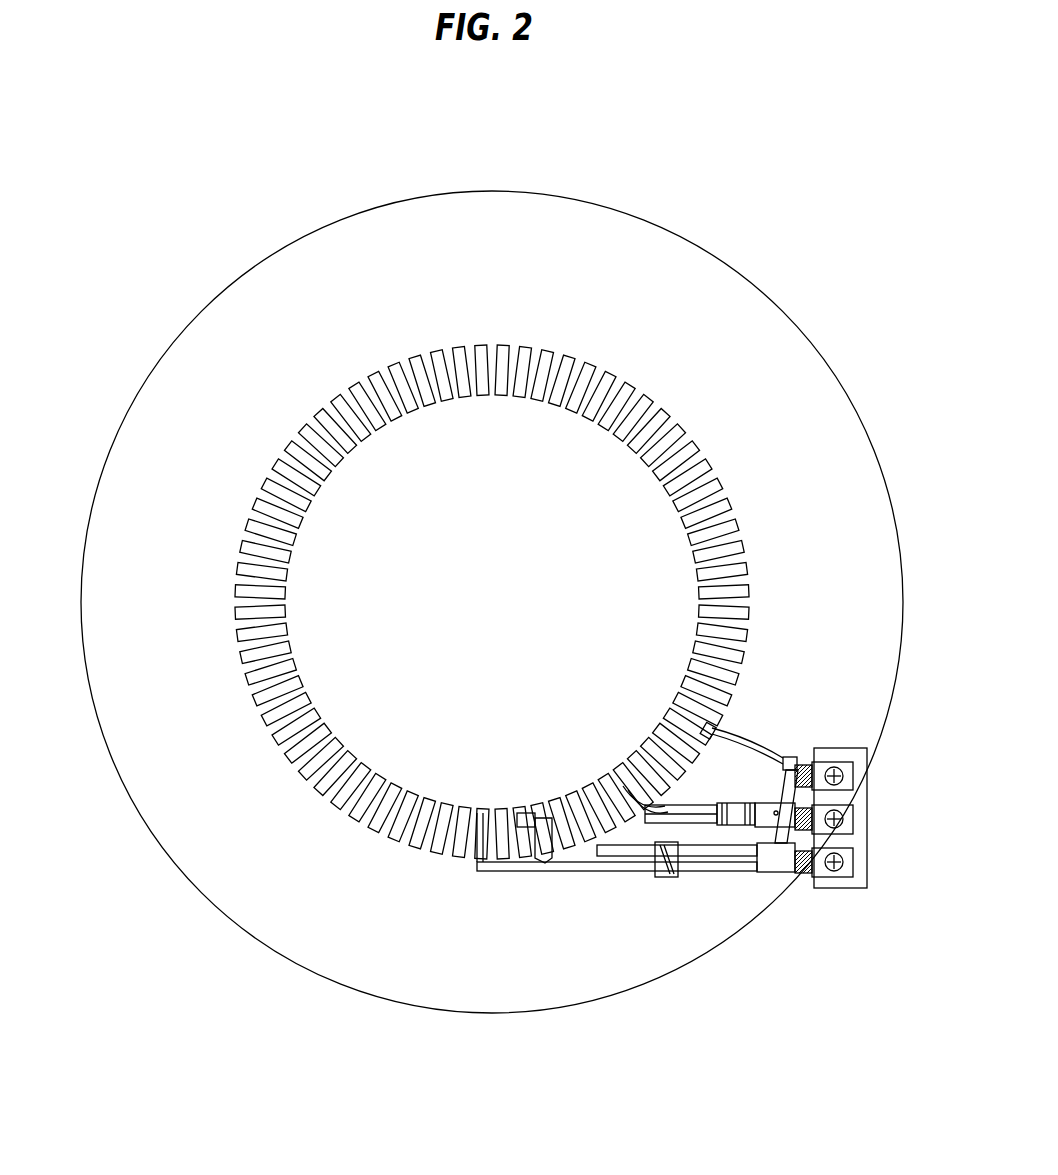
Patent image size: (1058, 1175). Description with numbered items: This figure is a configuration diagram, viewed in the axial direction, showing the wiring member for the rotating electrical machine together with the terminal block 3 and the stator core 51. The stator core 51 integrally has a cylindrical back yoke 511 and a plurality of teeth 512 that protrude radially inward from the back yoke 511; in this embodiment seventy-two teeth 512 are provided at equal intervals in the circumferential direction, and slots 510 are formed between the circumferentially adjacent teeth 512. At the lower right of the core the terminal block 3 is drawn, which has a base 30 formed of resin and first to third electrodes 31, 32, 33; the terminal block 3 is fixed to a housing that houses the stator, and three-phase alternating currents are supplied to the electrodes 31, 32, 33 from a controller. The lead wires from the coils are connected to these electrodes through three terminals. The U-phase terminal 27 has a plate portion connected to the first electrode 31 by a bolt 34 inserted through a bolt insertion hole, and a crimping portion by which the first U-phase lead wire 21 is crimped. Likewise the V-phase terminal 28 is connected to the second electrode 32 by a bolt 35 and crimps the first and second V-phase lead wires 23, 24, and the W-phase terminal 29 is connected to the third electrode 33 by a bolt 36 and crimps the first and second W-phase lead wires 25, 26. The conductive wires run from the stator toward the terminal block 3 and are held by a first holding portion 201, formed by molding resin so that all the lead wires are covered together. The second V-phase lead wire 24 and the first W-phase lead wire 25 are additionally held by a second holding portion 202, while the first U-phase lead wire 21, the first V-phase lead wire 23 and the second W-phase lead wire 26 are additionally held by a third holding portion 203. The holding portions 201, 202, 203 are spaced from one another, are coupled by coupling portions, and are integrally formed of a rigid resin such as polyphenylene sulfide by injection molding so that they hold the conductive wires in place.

The stator core 51 is at (492, 602).
The back yoke 511 is at (257, 264).
The slots 510 is at (492, 592).
The teeth 512 is at (574, 411).
The first V-phase lead wire 23 is at (773, 753).
The terminal block 3 is at (858, 813).
The base 30 is at (842, 884).
The U-phase terminal 27 is at (845, 778).
The V-phase terminal 28 is at (845, 825).
The W-phase terminal 29 is at (847, 875).
The first electrode 31 is at (853, 763).
The second electrode 32 is at (812, 808).
The third electrode 33 is at (812, 848).
The bolt 34 is at (838, 768).
The bolt 35 is at (843, 816).
The bolt 36 is at (845, 862).
The first U-phase lead wire 21 is at (640, 850).
The second V-phase lead wire 24 is at (675, 822).
The first W-phase lead wire 25 is at (707, 807).
The first holding portion 201 is at (768, 857).
The second holding portion 202 is at (733, 807).
The third holding portion 203 is at (670, 872).
The second W-phase lead wire 26 is at (547, 860).